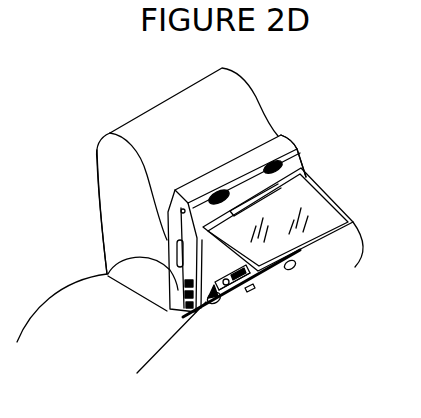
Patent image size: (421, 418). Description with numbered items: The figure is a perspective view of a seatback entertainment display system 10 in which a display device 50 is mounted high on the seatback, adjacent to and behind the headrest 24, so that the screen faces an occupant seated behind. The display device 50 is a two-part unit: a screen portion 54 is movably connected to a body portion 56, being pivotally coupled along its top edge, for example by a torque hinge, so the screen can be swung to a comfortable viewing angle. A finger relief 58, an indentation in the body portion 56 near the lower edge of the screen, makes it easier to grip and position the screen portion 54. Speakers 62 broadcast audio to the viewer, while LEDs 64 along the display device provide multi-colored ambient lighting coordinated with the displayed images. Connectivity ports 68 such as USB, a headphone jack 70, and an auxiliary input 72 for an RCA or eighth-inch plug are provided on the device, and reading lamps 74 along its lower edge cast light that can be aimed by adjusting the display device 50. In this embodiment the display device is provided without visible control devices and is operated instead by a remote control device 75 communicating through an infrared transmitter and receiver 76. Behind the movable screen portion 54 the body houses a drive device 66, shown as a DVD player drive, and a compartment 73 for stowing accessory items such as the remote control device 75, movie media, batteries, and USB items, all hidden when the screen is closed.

The seatback entertainment display system 10 is at (335, 106).
The headrest 24 is at (240, 97).
The display device 50 is at (303, 186).
The screen portion 54 is at (326, 218).
The body portion 56 is at (286, 157).
The finger relief 58 is at (250, 293).
The speakers 62 is at (270, 163).
The LEDs 64 is at (147, 215).
The drive device 66 is at (108, 276).
The connectivity ports 68 is at (178, 285).
The headphone jack 70 is at (181, 298).
The auxiliary input 72 is at (188, 311).
The compartment 73 is at (210, 308).
The reading lamps 74 is at (218, 303).
The remote control device 75 is at (232, 287).
The infrared transmitter and receiver 76 is at (288, 157).